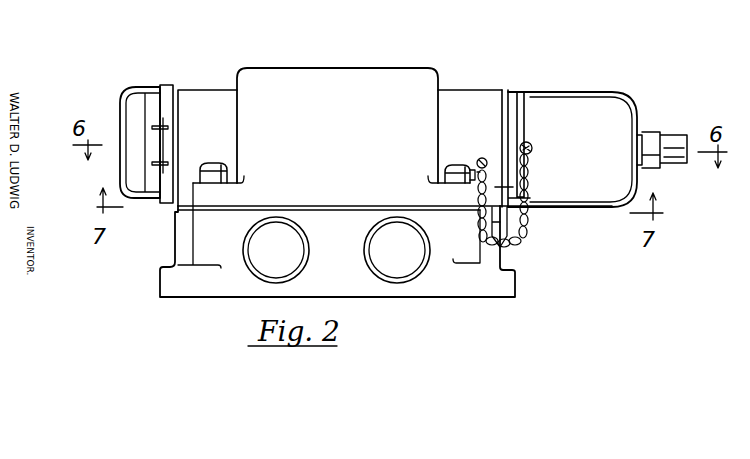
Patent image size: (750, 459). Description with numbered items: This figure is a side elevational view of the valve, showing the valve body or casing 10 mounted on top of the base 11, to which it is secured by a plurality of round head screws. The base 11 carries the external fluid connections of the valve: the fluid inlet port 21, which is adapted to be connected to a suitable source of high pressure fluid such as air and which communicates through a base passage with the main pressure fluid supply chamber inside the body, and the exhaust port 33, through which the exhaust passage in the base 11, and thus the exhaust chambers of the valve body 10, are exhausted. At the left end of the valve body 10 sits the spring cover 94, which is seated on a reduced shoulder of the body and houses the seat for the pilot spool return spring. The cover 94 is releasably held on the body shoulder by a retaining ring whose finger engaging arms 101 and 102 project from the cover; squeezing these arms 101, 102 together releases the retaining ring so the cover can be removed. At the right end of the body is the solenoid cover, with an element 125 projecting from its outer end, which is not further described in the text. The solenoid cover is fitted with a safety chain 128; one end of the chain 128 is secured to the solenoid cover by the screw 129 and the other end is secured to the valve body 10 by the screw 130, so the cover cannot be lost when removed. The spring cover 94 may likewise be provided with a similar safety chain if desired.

The valve body 10 is at (388, 67).
The base 11 is at (525, 286).
The fluid inlet port 21 is at (294, 233).
The exhaust port 33 is at (414, 237).
The spring cover 94 is at (112, 105).
The finger engaging arm 101 is at (163, 128).
The finger engaging arm 102 is at (163, 158).
The fitting 125 is at (684, 131).
The safety chain 128 is at (533, 165).
The screw 129 is at (533, 147).
The screw 130 is at (474, 176).